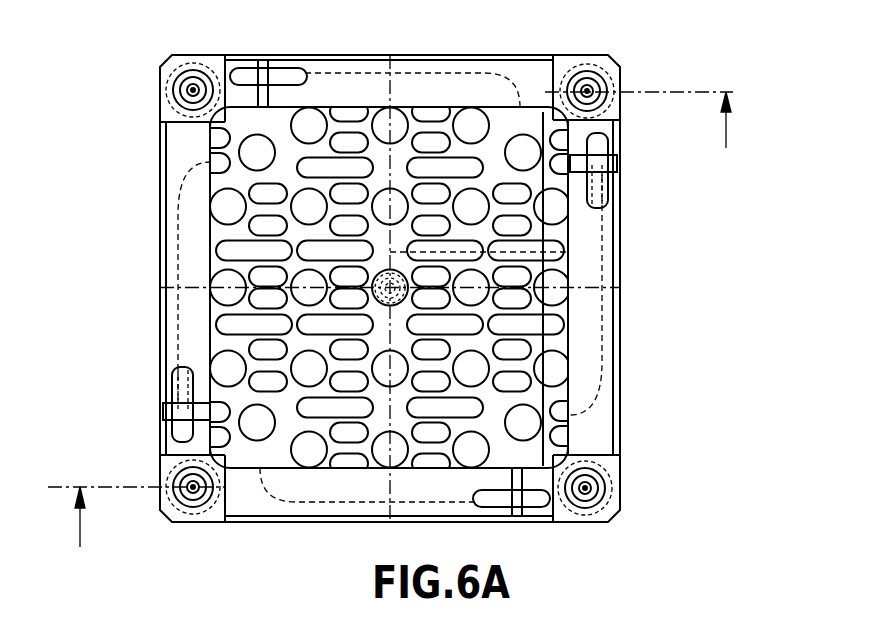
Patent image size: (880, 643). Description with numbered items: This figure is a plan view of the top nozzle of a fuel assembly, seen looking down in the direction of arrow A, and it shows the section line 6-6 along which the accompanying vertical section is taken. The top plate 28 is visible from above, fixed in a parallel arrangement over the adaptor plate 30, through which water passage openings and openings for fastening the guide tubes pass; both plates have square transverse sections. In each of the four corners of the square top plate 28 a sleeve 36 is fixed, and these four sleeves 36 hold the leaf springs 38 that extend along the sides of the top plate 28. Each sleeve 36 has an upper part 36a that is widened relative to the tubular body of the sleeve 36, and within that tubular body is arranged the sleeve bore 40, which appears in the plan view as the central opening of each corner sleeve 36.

The section line 6- 6 is at (404, 319).
The top plate 28 is at (618, 403).
The adaptor plate 30 is at (540, 272).
The sleeve 36 is at (632, 497).
The upper part 36a is at (618, 467).
The leaf spring 38 is at (590, 335).
The sleeve bore 40 is at (178, 483).